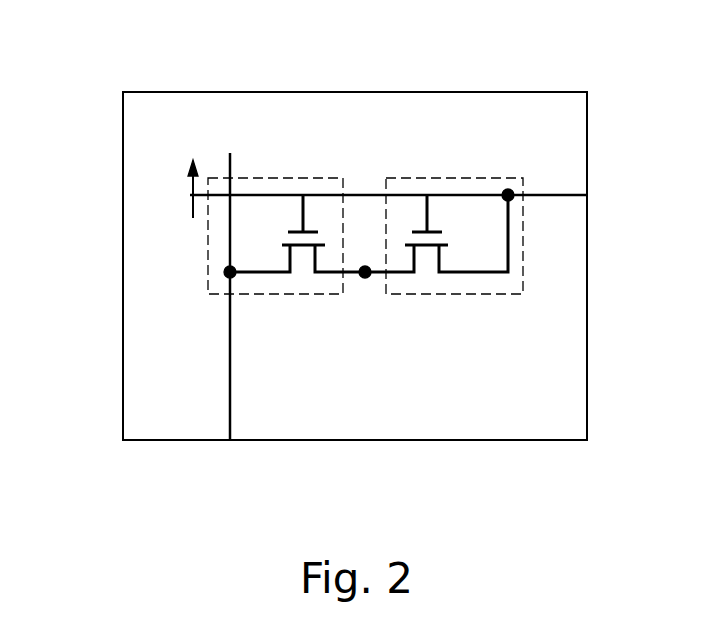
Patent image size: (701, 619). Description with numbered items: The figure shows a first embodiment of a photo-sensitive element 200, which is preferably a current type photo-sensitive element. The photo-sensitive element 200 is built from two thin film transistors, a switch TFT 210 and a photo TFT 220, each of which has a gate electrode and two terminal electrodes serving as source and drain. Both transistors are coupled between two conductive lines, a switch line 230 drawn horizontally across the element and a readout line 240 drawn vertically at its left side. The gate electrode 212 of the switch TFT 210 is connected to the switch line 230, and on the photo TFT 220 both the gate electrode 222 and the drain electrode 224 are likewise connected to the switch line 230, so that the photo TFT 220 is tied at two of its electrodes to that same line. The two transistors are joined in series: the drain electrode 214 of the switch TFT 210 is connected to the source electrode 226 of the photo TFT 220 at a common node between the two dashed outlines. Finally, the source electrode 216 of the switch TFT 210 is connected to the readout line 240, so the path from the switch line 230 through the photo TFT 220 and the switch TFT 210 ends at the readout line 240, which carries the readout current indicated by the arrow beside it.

The photo-sensitive element 200 is at (363, 136).
The switch TFT 210 is at (207, 265).
The gate electrode 212 is at (303, 213).
The drain electrode 214 is at (326, 273).
The source electrode 216 is at (253, 273).
The photo TFT 220 is at (508, 264).
The gate electrode 222 is at (427, 213).
The drain electrode 224 is at (472, 273).
The source electrode 226 is at (398, 273).
The switch line 230 is at (553, 195).
The readout line 240 is at (230, 395).